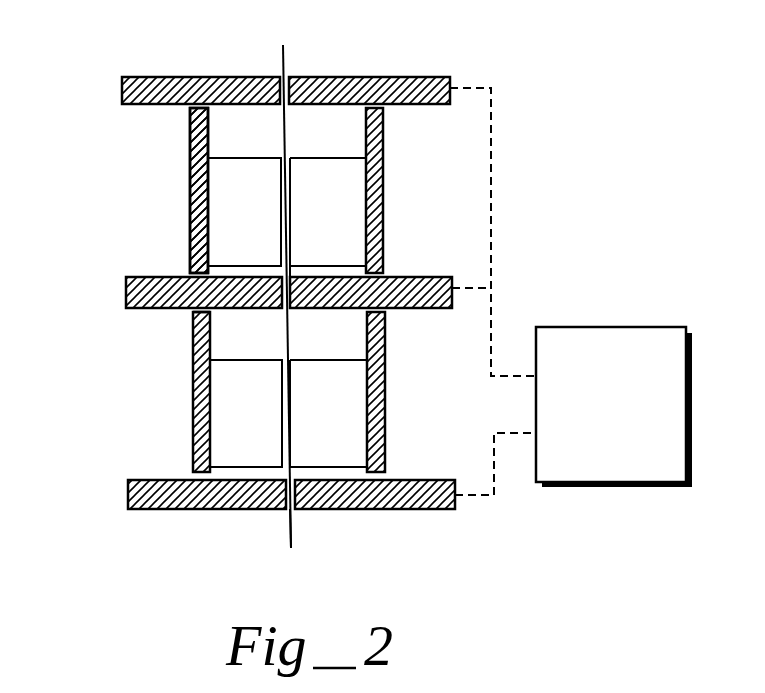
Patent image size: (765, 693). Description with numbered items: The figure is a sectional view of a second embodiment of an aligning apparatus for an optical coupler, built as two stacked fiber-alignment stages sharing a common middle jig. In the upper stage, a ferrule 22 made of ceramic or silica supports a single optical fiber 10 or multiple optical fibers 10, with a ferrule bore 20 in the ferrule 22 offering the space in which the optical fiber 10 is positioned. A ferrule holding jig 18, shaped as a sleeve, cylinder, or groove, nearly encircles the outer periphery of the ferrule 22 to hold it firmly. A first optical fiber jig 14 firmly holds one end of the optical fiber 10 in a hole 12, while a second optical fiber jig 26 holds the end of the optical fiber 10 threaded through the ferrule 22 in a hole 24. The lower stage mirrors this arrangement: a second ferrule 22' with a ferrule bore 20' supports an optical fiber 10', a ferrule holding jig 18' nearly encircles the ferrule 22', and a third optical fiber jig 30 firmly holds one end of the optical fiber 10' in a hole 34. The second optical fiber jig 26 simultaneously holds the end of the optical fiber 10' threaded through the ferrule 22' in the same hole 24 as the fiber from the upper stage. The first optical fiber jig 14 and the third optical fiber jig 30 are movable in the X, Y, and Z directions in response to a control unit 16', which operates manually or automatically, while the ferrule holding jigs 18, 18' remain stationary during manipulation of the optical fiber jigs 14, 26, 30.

The optical fiber 10 is at (235, 154).
The optical fiber 10' is at (241, 431).
The hole 12 is at (287, 73).
The first optical fiber jig 14 is at (375, 77).
The control unit 16' is at (614, 366).
The ferrule holding jig 18 is at (401, 190).
The ferrule holding jig 18' is at (405, 392).
The ferrule bore 20 is at (287, 186).
The ferrule bore 20' is at (288, 388).
The ferrule 22 is at (172, 190).
The second ferrule 22' is at (174, 392).
The hole 24 is at (291, 277).
The second optical fiber jig 26 is at (137, 292).
The third optical fiber jig 30 is at (128, 495).
The hole 34 is at (291, 510).